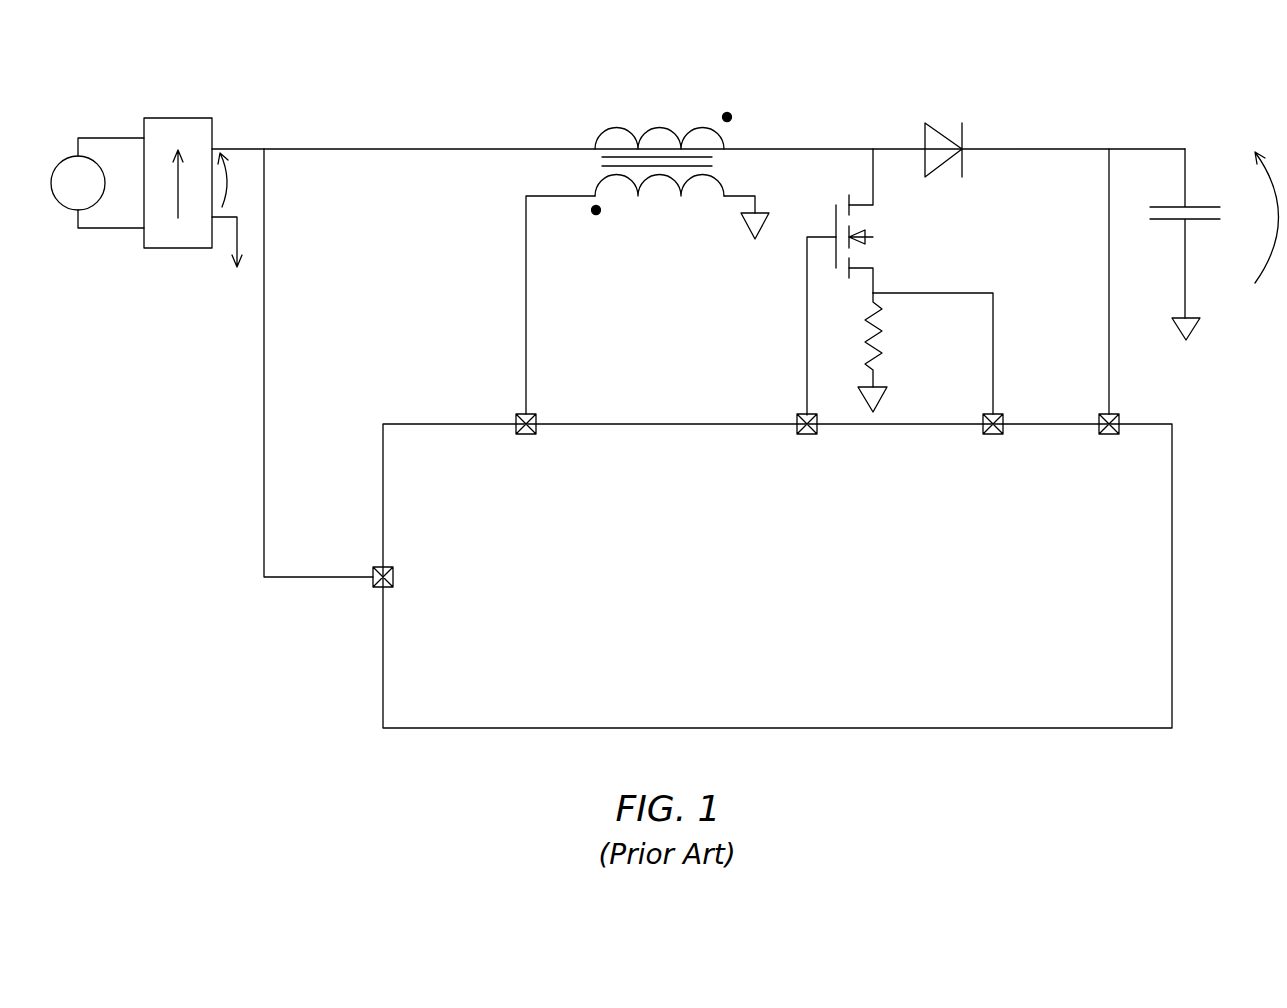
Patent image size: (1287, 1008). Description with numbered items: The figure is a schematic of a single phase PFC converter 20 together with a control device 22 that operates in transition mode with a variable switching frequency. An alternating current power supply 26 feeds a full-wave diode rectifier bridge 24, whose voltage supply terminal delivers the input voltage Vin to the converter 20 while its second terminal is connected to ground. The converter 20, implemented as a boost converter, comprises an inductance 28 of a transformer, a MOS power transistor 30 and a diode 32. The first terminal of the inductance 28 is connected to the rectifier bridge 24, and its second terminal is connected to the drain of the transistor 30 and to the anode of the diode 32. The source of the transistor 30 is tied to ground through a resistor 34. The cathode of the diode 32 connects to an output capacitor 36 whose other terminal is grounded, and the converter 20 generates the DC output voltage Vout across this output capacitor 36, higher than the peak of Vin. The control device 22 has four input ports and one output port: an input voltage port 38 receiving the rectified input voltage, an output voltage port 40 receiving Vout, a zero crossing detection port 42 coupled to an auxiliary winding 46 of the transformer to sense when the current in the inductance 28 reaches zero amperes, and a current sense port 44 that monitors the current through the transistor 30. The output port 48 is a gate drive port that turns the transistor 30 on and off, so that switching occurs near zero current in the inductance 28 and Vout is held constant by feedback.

The single phase PFC converter 20 is at (588, 100).
The control device 22 is at (1173, 578).
The full-wave diode rectifier bridge 24 is at (178, 118).
The alternating current (AC) power supply 26 is at (58, 158).
The inductance 28 is at (663, 128).
The metal oxide semiconductor (MOS) power transistor 30 is at (874, 250).
The diode 32 is at (945, 130).
The resistor 34 is at (883, 340).
The output capacitor 36 is at (1155, 222).
The input voltage port 38 is at (378, 588).
The output voltage port 40 is at (1119, 414).
The zero crossing detection (ZCD) port 42 is at (536, 414).
The current sense (CS) port 44 is at (1003, 414).
The auxiliary winding 46 is at (681, 190).
The output port 48 is at (797, 414).